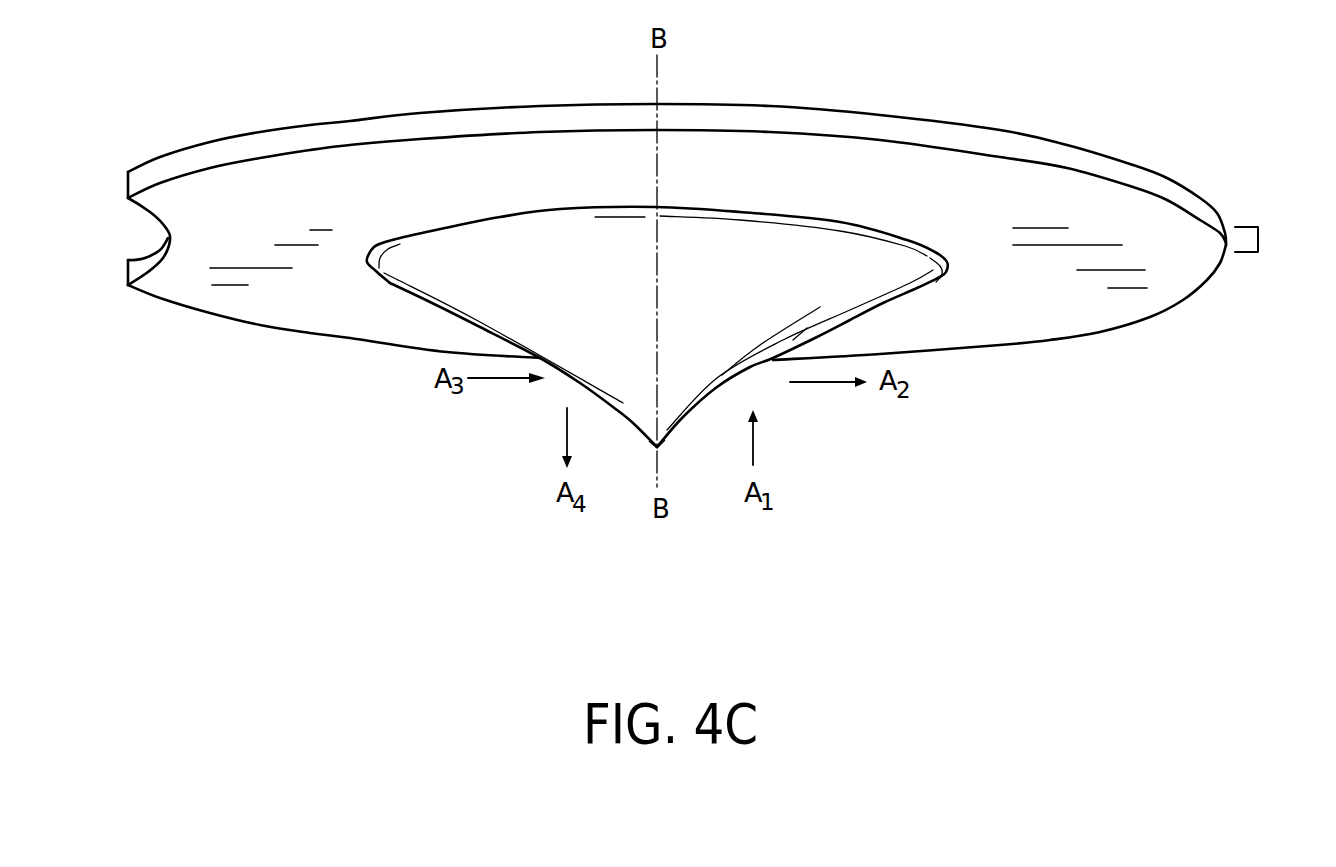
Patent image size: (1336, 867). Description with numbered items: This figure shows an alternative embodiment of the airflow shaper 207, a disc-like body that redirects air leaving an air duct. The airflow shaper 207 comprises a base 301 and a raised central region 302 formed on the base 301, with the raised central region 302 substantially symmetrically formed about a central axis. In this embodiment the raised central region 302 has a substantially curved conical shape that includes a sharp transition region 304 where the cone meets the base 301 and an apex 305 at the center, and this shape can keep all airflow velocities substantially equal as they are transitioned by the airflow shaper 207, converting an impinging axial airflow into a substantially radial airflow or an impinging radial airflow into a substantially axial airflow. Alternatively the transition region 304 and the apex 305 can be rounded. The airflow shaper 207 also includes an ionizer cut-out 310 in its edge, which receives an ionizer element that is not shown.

The airflow shaper 207 is at (408, 463).
The base 301 is at (1258, 240).
The raised central region 302 is at (627, 420).
The sharp transition region 304 is at (947, 265).
The apex 305 is at (660, 445).
The ionizer cut-out 310 is at (120, 175).